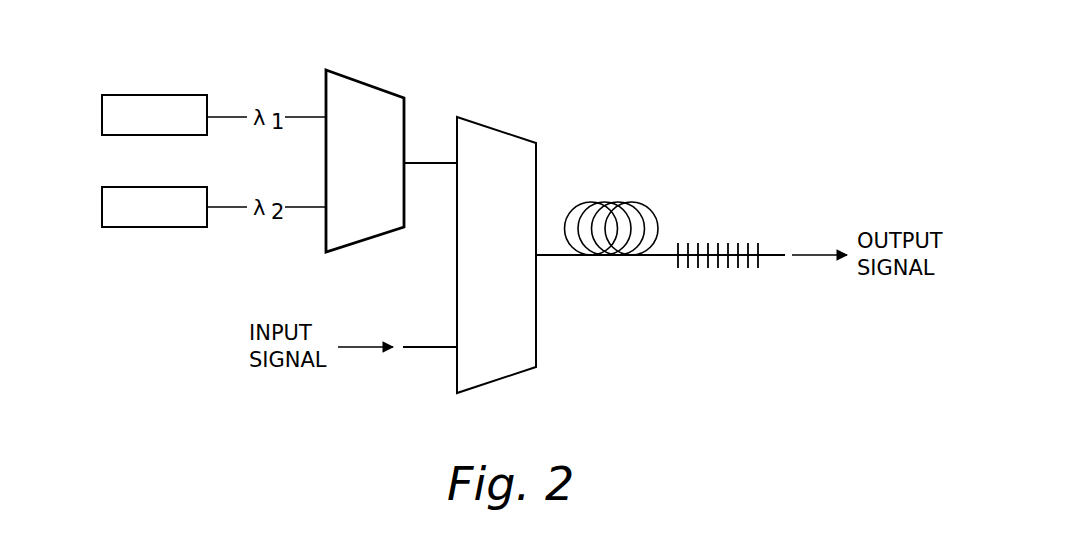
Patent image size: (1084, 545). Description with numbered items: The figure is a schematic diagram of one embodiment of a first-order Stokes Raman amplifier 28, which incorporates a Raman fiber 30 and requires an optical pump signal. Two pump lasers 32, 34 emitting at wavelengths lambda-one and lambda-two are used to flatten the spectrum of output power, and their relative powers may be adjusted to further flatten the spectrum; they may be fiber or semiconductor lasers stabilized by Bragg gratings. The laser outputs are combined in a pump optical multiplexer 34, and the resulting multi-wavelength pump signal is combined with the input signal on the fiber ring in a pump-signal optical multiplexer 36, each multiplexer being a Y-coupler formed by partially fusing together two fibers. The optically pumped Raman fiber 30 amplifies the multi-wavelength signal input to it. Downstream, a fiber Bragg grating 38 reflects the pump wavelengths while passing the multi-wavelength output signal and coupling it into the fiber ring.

The Raman amplifier 28 is at (776, 136).
The Raman fiber 30 is at (617, 202).
The pump laser 32 is at (154, 95).
The pump laser / pump optical multiplexer 34 is at (153, 227).
The pump-signal optical multiplexer 36 is at (493, 125).
The fiber Bragg grating 38 is at (698, 250).